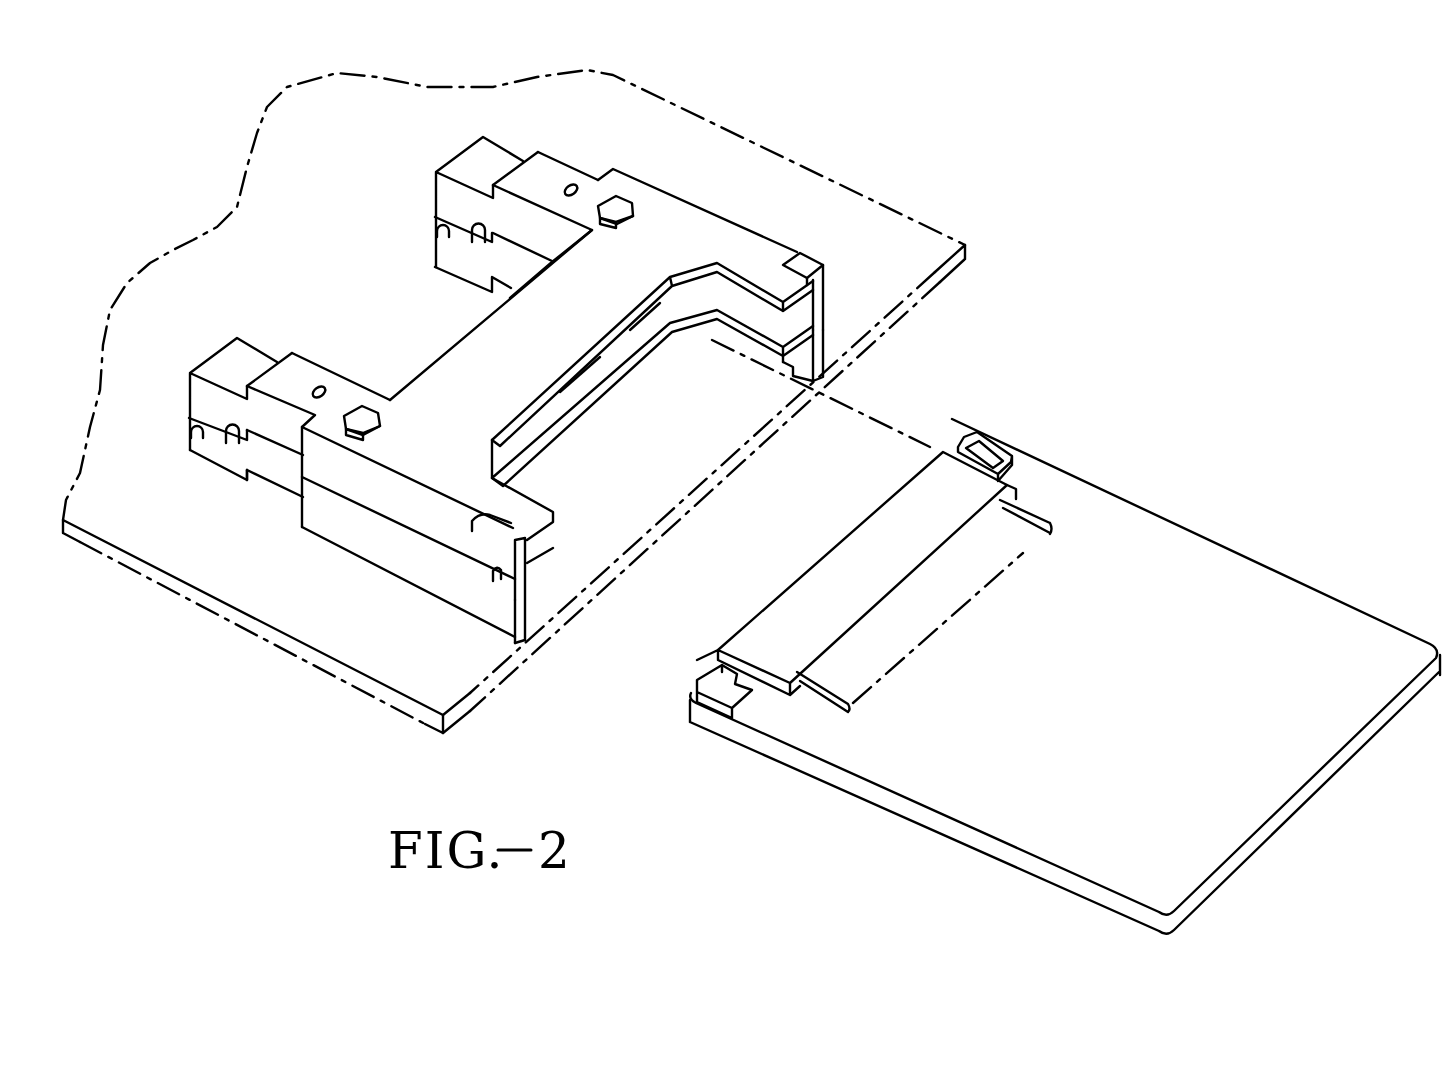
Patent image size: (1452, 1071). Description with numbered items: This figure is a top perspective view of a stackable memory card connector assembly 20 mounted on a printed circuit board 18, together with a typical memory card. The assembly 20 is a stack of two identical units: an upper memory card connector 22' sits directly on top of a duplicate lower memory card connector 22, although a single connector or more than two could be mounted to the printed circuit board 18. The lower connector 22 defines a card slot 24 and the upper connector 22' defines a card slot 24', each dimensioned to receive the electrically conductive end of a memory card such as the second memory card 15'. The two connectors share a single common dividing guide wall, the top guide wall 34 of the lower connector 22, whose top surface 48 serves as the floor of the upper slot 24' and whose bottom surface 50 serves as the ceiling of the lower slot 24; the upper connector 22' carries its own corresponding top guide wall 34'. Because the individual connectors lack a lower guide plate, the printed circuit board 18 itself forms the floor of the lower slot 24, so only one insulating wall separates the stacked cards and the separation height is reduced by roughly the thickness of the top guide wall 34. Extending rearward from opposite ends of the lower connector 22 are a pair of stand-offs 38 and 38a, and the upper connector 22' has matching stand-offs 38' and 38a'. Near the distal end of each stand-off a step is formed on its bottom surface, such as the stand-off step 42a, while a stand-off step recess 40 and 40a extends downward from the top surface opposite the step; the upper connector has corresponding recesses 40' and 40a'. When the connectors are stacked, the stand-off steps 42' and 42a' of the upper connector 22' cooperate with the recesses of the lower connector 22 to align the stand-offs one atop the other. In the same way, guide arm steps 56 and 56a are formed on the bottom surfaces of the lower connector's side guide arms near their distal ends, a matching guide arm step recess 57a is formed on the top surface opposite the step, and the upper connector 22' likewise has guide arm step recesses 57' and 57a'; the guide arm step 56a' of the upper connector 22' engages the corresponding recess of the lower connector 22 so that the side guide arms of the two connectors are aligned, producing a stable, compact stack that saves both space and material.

The second memory card 15' is at (1065, 676).
The printed circuit board 18 is at (846, 179).
The stackable memory card connector assembly 20 is at (318, 316).
The memory card connector 22 is at (870, 358).
The memory card connector 22' is at (891, 297).
The card slot 24 is at (578, 617).
The card slot 24' is at (571, 564).
The top guide wall 34 is at (652, 403).
The contact arm 34' is at (652, 354).
The stand-off 38 is at (410, 254).
The stand-off 38' is at (423, 187).
The stand-off 38a is at (170, 449).
The stand-off 38a' is at (212, 384).
The stand-off step recess 40 is at (453, 272).
The pin block 40' is at (550, 197).
The stand-off step recess 40a is at (217, 473).
The pin block 40a' is at (273, 401).
The stand-off step 42' is at (393, 204).
The stand-off step 42a is at (262, 510).
The stand-off step 42a' is at (171, 420).
The top surface of top guide wall 48 is at (646, 320).
The bottom surface of top guide wall 50 is at (577, 422).
The guide arm step 56 is at (797, 377).
The guide arm step 56a is at (525, 679).
The guide arm step 56a' is at (437, 632).
The tab 57' is at (841, 251).
The guide arm step recess 57a is at (415, 599).
The tab 57a' is at (402, 558).